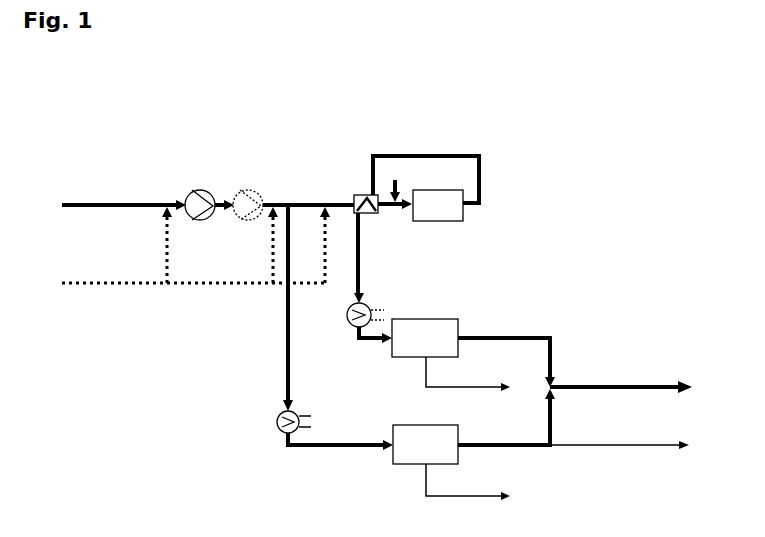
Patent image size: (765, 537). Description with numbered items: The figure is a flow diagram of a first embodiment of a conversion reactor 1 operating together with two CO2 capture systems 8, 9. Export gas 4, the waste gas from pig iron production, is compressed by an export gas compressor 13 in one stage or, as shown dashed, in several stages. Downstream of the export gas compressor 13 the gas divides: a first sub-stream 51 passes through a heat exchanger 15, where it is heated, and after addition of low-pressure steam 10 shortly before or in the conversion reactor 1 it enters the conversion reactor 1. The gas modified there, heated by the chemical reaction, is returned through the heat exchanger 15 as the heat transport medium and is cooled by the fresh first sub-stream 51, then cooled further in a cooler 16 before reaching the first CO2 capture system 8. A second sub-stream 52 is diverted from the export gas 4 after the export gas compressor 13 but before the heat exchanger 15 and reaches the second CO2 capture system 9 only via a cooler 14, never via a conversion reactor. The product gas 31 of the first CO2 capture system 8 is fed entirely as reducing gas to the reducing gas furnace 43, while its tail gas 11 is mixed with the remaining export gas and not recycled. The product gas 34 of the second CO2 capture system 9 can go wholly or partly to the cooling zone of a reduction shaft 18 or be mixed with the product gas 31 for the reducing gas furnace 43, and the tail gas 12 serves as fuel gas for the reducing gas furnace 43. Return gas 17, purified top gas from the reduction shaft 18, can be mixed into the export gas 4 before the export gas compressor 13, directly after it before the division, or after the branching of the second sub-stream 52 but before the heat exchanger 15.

The conversion reactor 1 is at (426, 188).
The export gas 4 is at (95, 205).
The first CO2 capture system 8 is at (408, 338).
The second CO2 capture system 9 is at (425, 444).
The low-pressure steam 10 is at (395, 182).
The tail gas 11 is at (422, 376).
The tail gas 12 is at (423, 480).
The export gas compressor 13 is at (204, 186).
The cooler 14 is at (276, 420).
The heat exchanger 15 is at (372, 215).
The cooler 16 is at (372, 307).
The return gas 17 is at (104, 292).
The reduction shaft 18 is at (635, 446).
The product gas 31 is at (532, 335).
The product gas 34 is at (540, 449).
The reducing gas furnace 43 is at (617, 443).
The first sub-stream 51 is at (310, 202).
The second sub-stream 52 is at (285, 372).